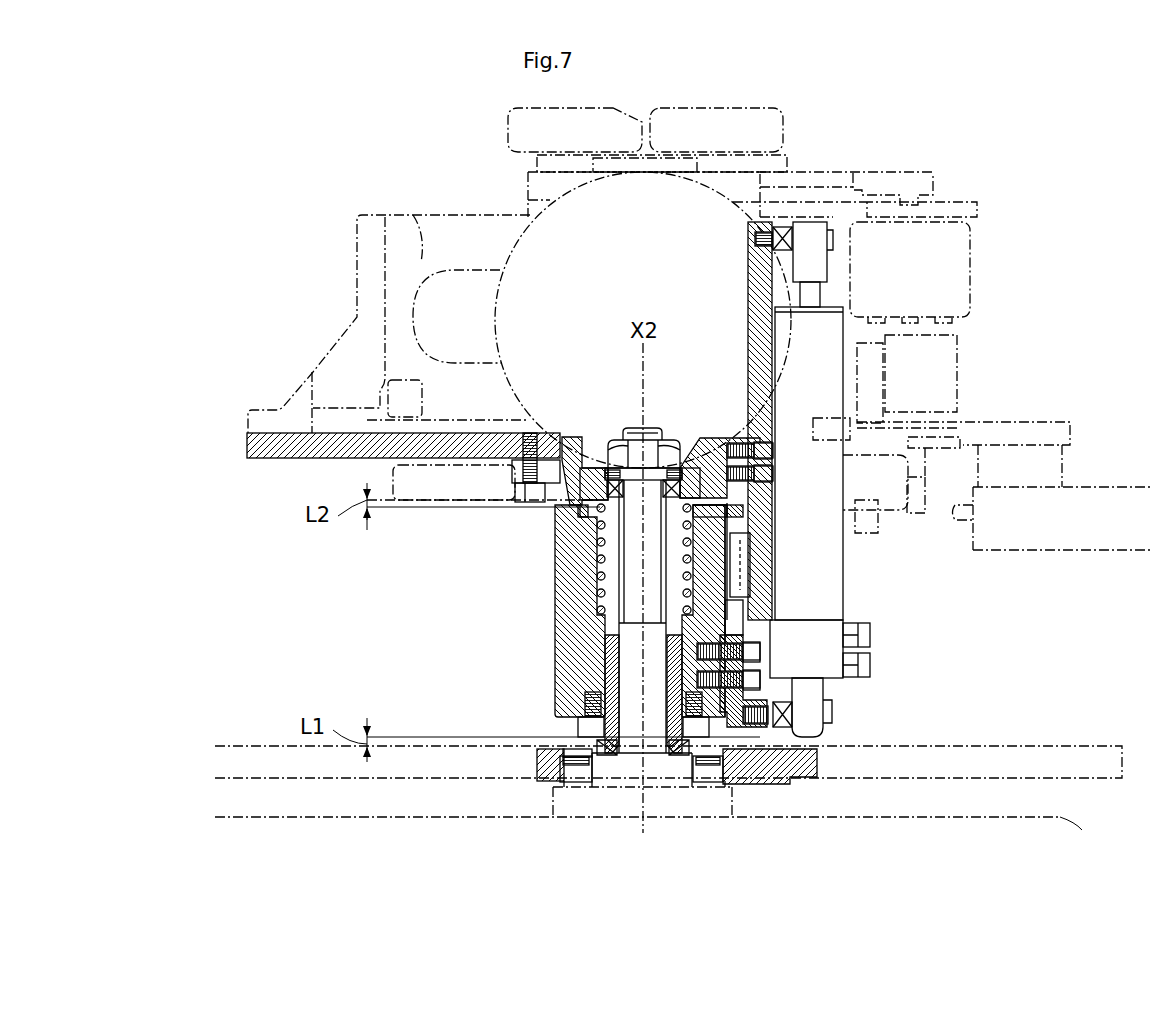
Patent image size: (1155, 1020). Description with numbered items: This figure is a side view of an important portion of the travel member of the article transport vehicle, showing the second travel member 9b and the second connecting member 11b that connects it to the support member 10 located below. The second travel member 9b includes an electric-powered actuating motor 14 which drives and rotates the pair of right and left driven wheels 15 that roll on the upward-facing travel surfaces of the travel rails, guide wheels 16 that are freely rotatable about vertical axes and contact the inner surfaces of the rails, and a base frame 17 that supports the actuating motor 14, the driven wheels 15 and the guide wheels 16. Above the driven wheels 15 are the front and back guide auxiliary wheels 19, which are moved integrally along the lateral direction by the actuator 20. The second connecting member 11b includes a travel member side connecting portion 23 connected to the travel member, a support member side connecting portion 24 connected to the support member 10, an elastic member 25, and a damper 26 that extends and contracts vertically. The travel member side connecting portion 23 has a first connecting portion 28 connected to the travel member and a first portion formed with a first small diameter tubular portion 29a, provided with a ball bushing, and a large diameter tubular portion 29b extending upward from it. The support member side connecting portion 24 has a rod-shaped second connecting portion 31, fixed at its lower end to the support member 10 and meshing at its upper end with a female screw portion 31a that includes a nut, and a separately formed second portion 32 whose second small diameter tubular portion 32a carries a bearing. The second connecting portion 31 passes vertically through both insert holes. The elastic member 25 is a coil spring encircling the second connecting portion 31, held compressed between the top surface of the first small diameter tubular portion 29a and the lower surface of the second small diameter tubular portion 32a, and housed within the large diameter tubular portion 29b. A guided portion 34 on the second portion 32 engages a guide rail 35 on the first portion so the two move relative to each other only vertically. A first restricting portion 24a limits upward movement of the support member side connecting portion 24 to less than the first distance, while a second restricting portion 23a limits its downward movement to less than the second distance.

The second travel member 9b is at (280, 244).
The actuating motor 14 is at (413, 215).
The driven wheels 15 is at (523, 257).
The guide auxiliary wheels 19 is at (613, 113).
The actuator 20 is at (942, 265).
The base frame 17 is at (247, 455).
The guide wheels 16 is at (393, 470).
The first connecting portion 28 is at (545, 433).
The female screw portion 31a is at (622, 447).
The second small diameter tubular portion 32a is at (695, 445).
The second portion 32 is at (716, 440).
The second connecting portion 31 is at (657, 612).
The travel member side connecting portion 23 is at (552, 640).
The second restricting portion 23a is at (578, 513).
The elastic member 25 is at (585, 545).
The support member side connecting portion 24 is at (598, 600).
The large diameter tubular portion 29b is at (560, 575).
The first small diameter tubular portion 29a is at (560, 690).
The guided portion 34 is at (775, 553).
The damper 26 is at (843, 585).
The guide rail 35 is at (772, 630).
The first restricting portion 24a is at (600, 760).
The support member 10 is at (1060, 817).
The second connecting member 11b is at (438, 628).